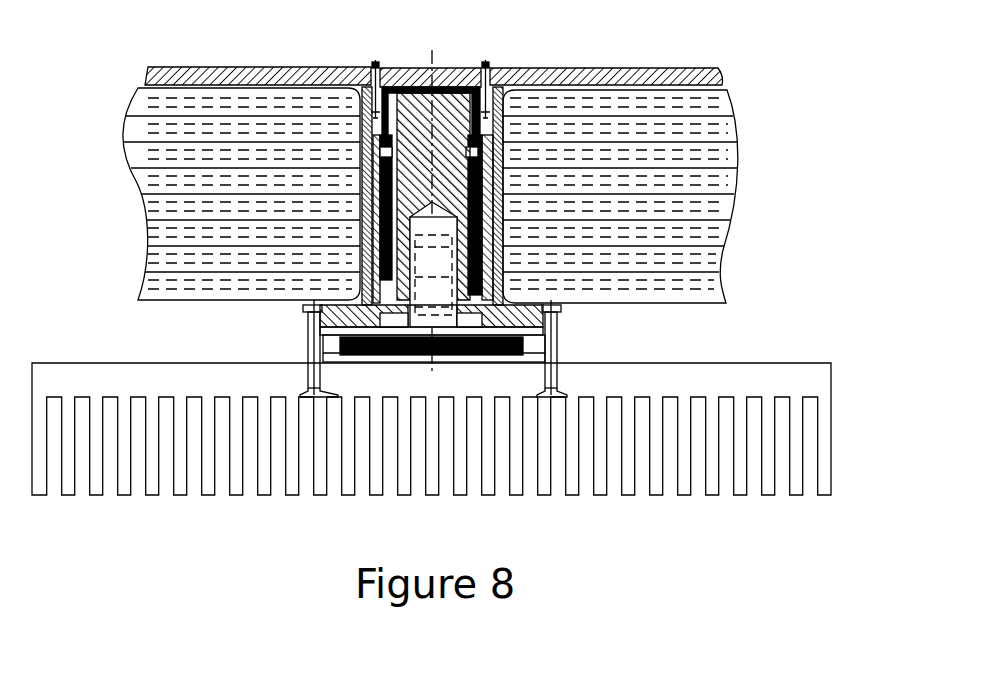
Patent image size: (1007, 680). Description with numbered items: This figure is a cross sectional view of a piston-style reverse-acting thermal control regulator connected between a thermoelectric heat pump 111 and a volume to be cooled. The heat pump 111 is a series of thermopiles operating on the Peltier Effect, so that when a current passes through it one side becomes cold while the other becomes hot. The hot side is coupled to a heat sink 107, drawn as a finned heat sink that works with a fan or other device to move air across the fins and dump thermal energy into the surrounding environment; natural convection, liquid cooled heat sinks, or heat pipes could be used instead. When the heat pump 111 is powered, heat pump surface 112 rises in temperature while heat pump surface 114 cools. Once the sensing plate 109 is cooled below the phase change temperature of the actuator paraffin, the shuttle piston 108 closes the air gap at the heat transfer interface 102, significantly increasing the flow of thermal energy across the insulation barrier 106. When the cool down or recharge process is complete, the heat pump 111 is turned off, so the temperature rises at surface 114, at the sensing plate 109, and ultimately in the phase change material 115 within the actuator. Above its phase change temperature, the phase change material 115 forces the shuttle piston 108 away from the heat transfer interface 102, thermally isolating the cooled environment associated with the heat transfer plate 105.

The heat transfer interface 102 is at (457, 67).
The heat transfer plate 105 is at (623, 76).
The insulation barrier 106 is at (730, 160).
The heat sink 107 is at (812, 390).
The shuttle piston 108 is at (503, 232).
The sensing plate 109 is at (500, 305).
The heat pump 111 is at (443, 355).
The heat pump surface 112 is at (402, 362).
The heat pump surface 114 is at (317, 257).
The phase change material 115 is at (362, 140).